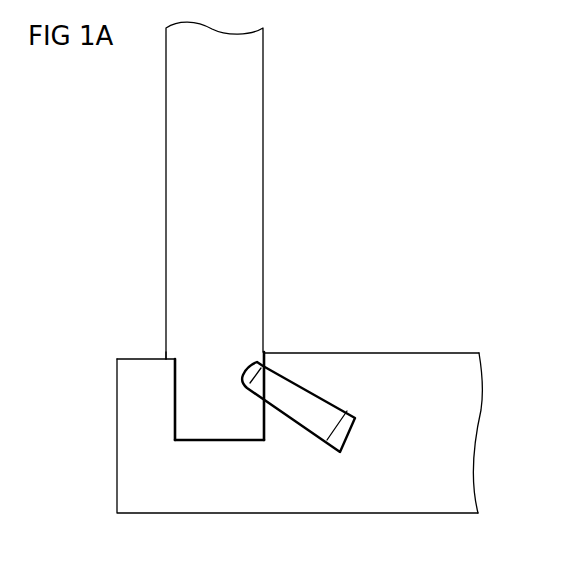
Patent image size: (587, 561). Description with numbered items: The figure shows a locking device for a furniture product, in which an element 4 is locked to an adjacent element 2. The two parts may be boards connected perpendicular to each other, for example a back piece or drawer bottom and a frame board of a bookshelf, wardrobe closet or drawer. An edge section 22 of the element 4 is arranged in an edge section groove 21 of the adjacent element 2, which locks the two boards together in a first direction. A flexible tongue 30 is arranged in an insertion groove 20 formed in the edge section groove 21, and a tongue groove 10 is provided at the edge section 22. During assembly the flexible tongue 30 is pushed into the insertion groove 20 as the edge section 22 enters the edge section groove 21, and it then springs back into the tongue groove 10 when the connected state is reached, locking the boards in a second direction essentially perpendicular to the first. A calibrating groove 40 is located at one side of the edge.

The adjacent element 2 is at (418, 382).
The element 4 is at (220, 157).
The tongue groove 10 is at (247, 372).
The insertion groove 20 is at (345, 412).
The edge section groove 21 is at (173, 407).
The edge section 22 is at (210, 400).
The flexible tongue 30 is at (313, 410).
The calibrating groove 40 is at (167, 356).